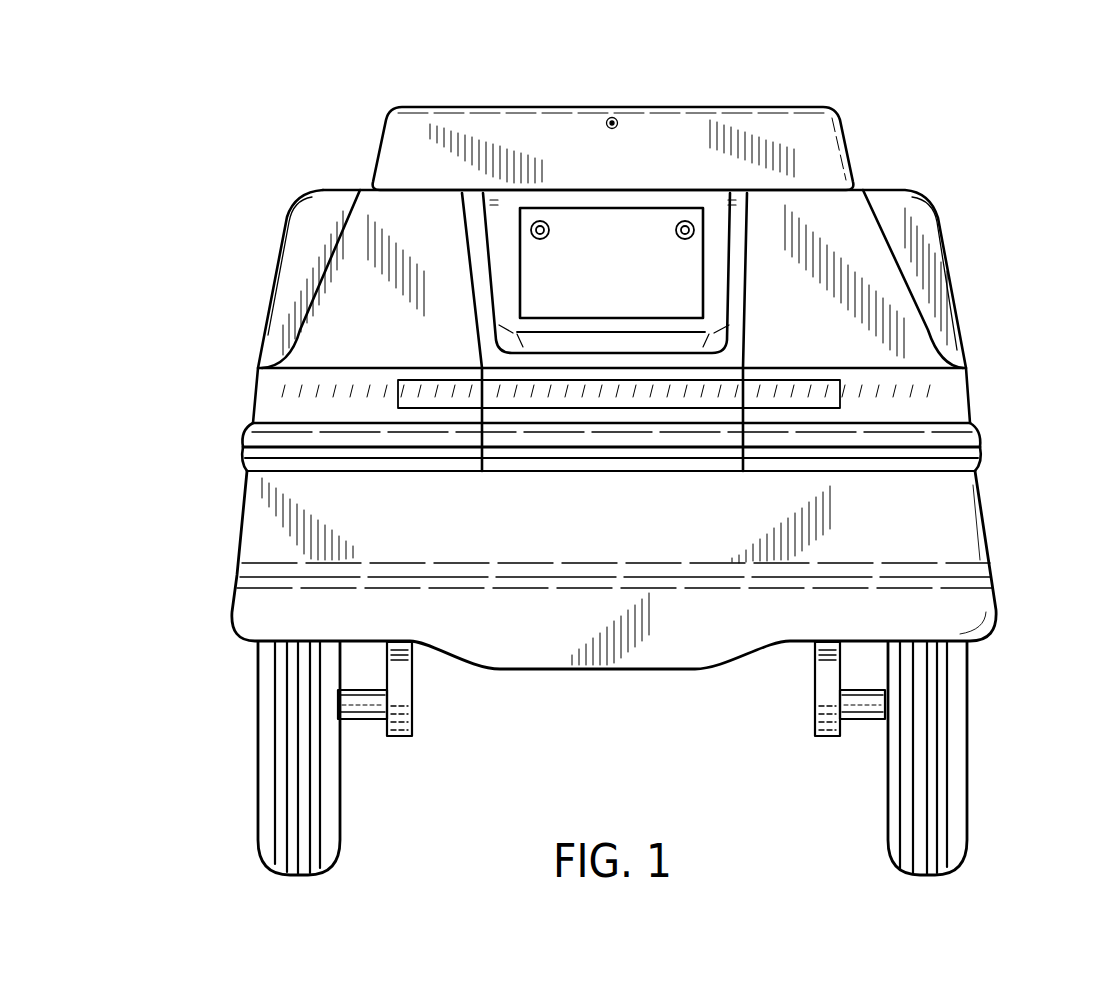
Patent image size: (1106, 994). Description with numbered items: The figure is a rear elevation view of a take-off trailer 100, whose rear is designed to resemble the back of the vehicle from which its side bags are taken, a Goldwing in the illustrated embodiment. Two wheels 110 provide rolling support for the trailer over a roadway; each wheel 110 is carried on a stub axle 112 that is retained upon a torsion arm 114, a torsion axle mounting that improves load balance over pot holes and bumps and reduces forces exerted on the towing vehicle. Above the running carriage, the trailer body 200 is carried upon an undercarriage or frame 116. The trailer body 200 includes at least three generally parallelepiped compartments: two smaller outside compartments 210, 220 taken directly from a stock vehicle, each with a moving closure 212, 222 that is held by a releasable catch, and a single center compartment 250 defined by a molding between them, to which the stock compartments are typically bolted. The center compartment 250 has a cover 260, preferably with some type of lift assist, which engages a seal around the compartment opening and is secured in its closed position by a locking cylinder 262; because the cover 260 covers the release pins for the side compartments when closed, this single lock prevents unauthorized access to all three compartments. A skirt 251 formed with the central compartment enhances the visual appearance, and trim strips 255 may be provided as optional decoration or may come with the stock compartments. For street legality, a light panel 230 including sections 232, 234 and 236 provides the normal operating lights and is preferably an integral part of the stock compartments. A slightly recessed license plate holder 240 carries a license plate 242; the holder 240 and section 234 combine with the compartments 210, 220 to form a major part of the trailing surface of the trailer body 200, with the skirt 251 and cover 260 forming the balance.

The take-off trailer 100 is at (1013, 104).
The wheel 110 is at (265, 772).
The stub axle 112 is at (356, 702).
The torsion arm 114 is at (404, 682).
The frame 116 is at (680, 658).
The trailer body 200 is at (611, 473).
The outside compartment 210 is at (859, 190).
The moving closure 212 is at (926, 230).
The outside compartment 220 is at (275, 259).
The moving closure 222 is at (302, 228).
The light panel 230 is at (606, 439).
The light panel section 232 is at (938, 393).
The light panel section 234 is at (595, 405).
The light panel section 236 is at (275, 395).
The license plate holder 240 is at (503, 215).
The license plate 242 is at (605, 228).
The center compartment 250 is at (654, 586).
The skirt 251 is at (970, 623).
The trim strip 255 is at (971, 452).
The cover 260 is at (759, 102).
The locking cylinder 262 is at (617, 118).